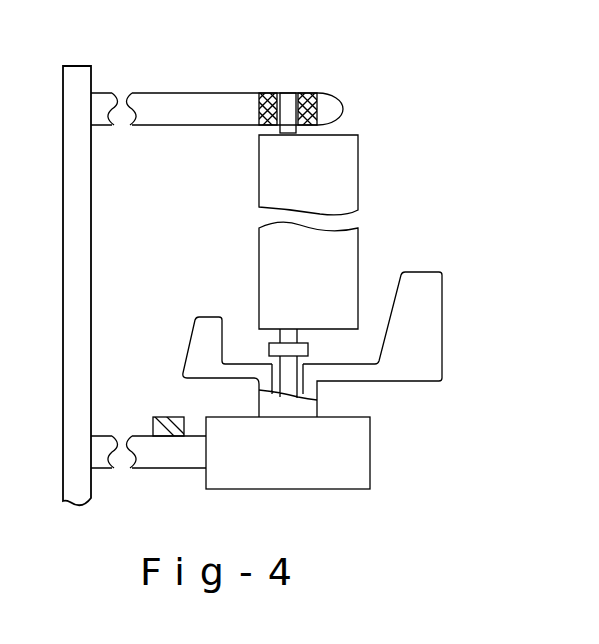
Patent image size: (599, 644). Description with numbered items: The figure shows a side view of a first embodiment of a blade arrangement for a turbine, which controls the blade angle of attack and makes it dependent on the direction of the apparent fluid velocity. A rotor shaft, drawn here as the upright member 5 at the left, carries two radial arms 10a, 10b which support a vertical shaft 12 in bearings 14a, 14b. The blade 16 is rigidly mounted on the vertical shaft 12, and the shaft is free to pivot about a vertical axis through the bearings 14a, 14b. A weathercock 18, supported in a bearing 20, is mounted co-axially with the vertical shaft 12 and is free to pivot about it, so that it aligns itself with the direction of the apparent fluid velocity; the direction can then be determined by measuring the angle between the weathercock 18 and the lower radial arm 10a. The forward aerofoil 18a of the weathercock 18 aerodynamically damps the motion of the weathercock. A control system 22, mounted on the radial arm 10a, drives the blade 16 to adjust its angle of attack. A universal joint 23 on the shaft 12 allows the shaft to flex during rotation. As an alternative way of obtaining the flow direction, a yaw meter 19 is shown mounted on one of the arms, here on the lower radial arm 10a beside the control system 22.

The frame plate 5 is at (73, 372).
The radial arm 10a is at (163, 457).
The radial arm 10b is at (158, 113).
The vertical shaft 12 is at (289, 93).
The bearing 14a is at (355, 452).
The bearing 14b is at (312, 93).
The blade 16 is at (345, 157).
The weathercock 18 is at (420, 285).
The forward aerofoil 18a is at (200, 347).
The yaw meter 19 is at (168, 420).
The bearing 20 is at (300, 383).
The control system 22 is at (278, 466).
The universal joint 23 is at (272, 352).